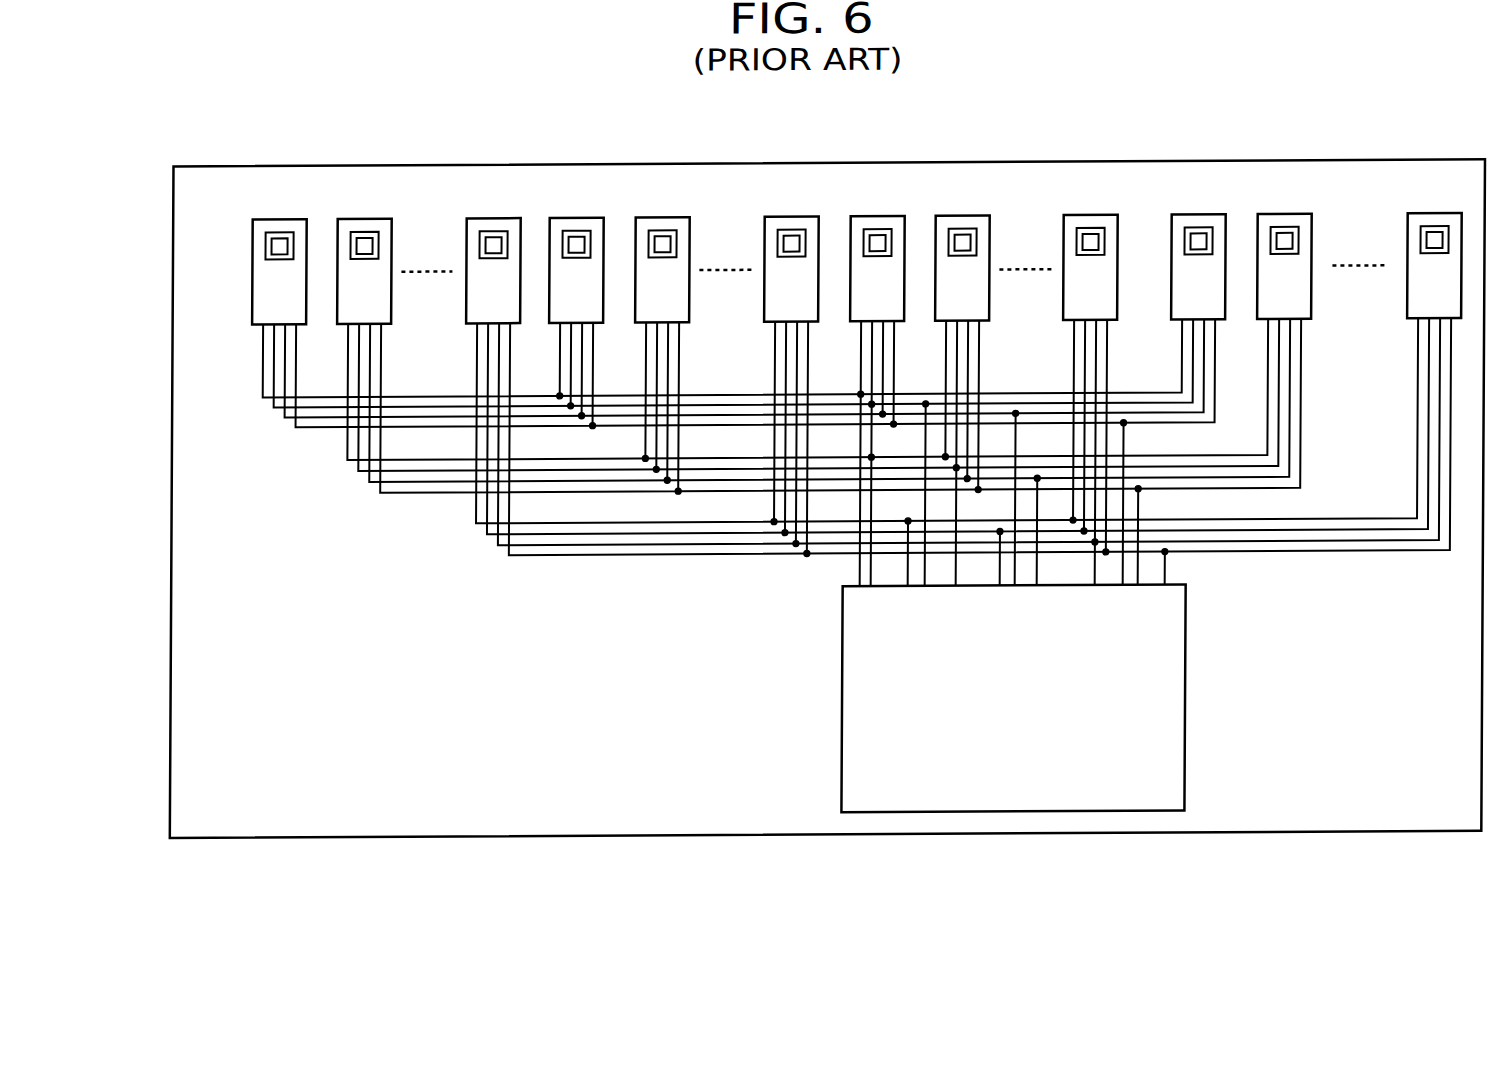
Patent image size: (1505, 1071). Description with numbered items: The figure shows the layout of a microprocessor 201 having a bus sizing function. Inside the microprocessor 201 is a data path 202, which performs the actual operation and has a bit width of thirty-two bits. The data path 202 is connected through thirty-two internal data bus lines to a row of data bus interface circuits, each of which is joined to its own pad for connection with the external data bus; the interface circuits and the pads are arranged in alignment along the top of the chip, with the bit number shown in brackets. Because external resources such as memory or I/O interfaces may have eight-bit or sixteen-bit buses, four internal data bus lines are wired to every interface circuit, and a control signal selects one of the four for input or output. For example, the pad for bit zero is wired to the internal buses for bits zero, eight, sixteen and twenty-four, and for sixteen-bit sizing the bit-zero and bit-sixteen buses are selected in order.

The microprocessor 201 is at (174, 818).
The data path 202 is at (1188, 655).